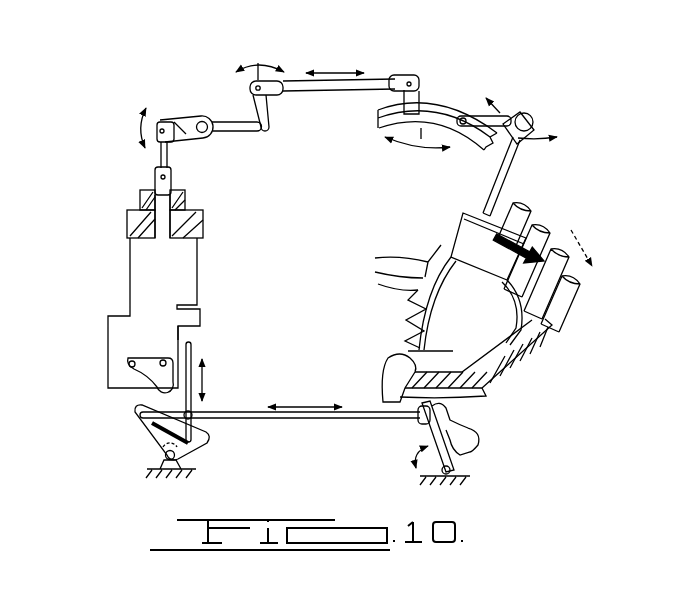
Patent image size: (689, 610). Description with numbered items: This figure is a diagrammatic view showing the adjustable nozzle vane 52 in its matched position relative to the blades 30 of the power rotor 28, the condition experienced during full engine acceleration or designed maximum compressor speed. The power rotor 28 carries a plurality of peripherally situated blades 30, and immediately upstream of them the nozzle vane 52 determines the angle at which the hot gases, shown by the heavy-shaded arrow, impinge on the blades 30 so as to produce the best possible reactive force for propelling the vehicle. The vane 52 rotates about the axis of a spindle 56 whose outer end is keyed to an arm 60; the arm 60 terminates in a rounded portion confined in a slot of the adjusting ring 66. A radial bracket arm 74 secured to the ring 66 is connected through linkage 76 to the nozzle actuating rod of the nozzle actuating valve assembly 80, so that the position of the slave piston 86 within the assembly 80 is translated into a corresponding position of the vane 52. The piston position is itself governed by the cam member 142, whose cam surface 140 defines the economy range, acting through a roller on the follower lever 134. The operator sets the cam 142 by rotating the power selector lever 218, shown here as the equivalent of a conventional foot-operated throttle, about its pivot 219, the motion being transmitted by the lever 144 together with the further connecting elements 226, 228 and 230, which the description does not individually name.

The power rotor 28 is at (511, 360).
The blades 30 is at (540, 218).
The adjustable nozzle vane 52 is at (476, 256).
The spindle 56 is at (512, 158).
The arm 60 is at (492, 118).
The adjusting ring 66 is at (447, 100).
The radial bracket arm 74 is at (411, 76).
The linkage 76 is at (266, 136).
The nozzle actuating valve assembly 80 is at (198, 267).
The slave piston 86 is at (177, 178).
The follower lever 134 is at (129, 362).
The cam surface 140 is at (140, 378).
The cam member 142 is at (156, 344).
The lever 144 is at (192, 346).
The power selector lever 218 is at (430, 433).
The pivot 219 is at (439, 480).
The rod 226 is at (277, 419).
The lever 228 is at (152, 437).
The pin 230 is at (194, 409).